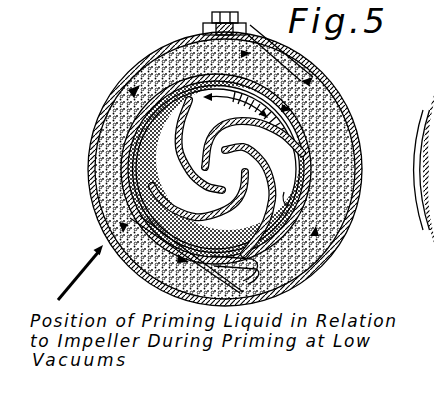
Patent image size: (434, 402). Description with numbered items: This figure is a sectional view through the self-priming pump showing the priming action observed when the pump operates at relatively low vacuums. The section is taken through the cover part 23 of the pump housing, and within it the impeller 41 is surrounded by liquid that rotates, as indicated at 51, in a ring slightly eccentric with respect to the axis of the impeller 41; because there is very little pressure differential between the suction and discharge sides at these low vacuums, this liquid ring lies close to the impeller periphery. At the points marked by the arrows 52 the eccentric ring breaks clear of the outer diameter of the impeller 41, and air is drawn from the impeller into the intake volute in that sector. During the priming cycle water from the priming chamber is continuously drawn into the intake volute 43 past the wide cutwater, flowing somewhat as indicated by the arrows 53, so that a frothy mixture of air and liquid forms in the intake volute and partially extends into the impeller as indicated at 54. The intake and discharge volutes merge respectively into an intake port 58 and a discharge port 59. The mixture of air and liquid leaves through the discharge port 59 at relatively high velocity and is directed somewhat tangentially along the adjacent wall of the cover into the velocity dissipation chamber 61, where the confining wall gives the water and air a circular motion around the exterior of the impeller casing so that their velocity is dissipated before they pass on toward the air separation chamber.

The cover part 23 is at (343, 127).
The velocity dissipation chamber 61 is at (348, 140).
The discharge port 59 is at (312, 78).
The arrows indicating flow of water into the intake volute 53 is at (135, 207).
The frothy mixture extending into the impeller 54 is at (148, 172).
The impeller 41 is at (267, 133).
The arrows indicating where the liquid ring breaks clear of the impeller 52 is at (190, 111).
The rotating liquid ring 51 is at (289, 204).
The intake volute 43 is at (175, 265).
The intake port 58 is at (298, 284).